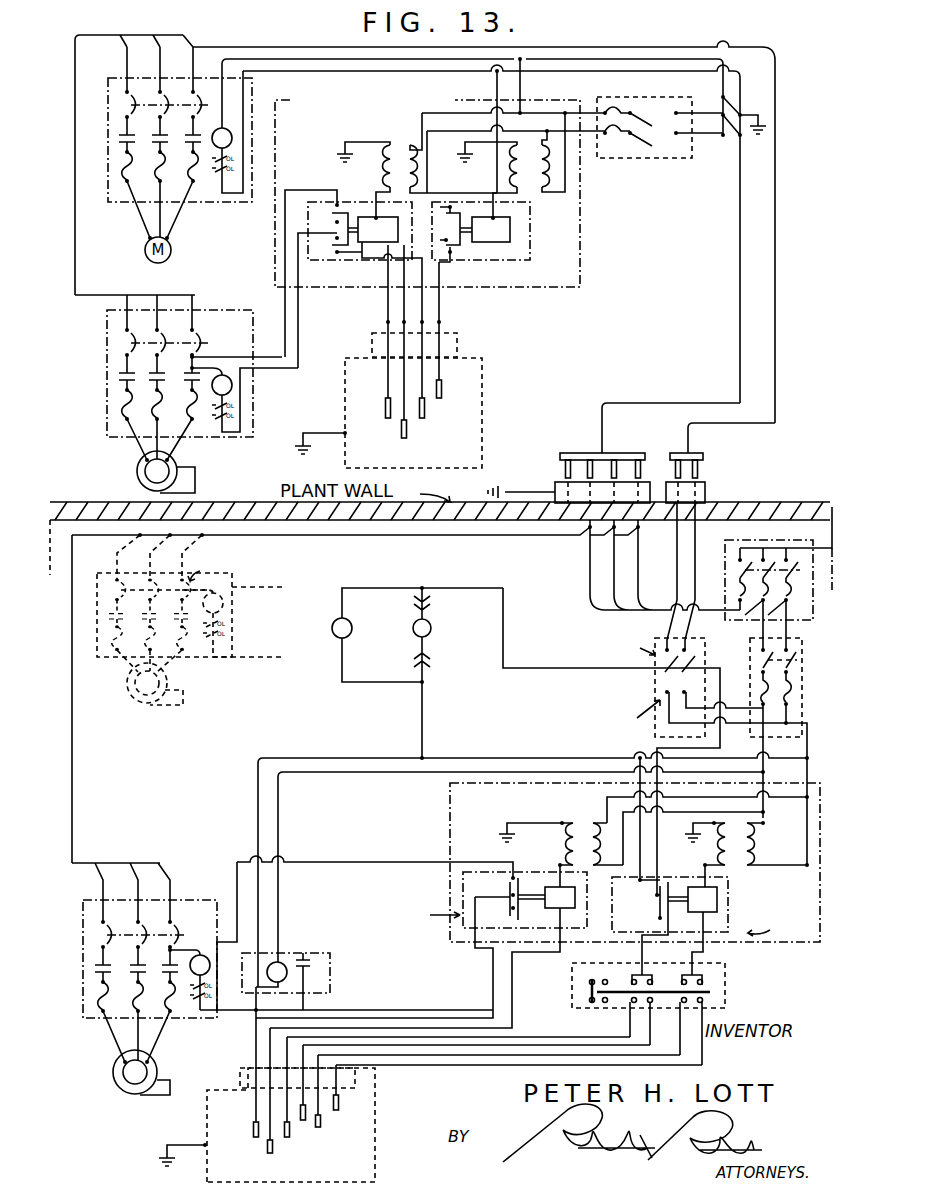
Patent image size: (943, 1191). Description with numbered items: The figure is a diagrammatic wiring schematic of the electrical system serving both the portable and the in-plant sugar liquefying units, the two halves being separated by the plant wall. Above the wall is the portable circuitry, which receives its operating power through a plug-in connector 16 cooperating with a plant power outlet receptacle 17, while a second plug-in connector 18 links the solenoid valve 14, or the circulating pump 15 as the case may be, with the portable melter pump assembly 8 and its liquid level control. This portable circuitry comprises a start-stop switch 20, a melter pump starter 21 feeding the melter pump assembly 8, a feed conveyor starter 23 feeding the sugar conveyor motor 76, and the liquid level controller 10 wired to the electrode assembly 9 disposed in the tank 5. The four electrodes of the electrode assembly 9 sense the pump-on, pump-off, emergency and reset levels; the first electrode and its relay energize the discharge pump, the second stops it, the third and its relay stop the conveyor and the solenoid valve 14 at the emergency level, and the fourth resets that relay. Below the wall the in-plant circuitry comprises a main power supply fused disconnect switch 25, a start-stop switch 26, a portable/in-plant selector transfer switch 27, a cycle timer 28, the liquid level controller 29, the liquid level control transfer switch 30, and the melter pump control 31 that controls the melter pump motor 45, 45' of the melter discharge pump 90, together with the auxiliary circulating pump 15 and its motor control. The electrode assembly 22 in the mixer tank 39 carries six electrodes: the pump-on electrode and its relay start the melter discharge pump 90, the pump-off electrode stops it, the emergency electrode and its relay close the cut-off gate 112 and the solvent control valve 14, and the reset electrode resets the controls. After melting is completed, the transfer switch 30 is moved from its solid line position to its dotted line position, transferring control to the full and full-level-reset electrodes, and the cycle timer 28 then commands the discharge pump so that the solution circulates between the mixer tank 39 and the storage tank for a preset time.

The sugar conveyor motor 76 is at (145, 254).
The feed conveyor starter 23 is at (204, 202).
The liquid level controller 10 is at (449, 248).
The start-stop switch 20 is at (700, 92).
The melter pump starter 21 is at (108, 410).
The melter pump assembly 8 is at (129, 469).
The electrode assembly 9 is at (448, 343).
The tank 5 is at (478, 401).
The plug-in connector 16 is at (623, 456).
The plant power outlet receptacle 17 is at (555, 488).
The second plug-in connector 18 is at (678, 453).
The main power supply fused disconnect switch 25 is at (740, 537).
The solenoid valve 14 is at (330, 636).
The cut-off gate 112 is at (438, 644).
The auxiliary circulating pump 15 is at (160, 688).
The selector transfer switch 27 is at (658, 688).
The start-stop switch 26 is at (748, 661).
The liquid level controller 29 is at (442, 825).
The cycle timer 28 is at (330, 975).
The melter pump control 31 is at (91, 1026).
The melter pump motor 45 is at (140, 1063).
The melter pump motor 45' is at (155, 1068).
The melter discharge pump 90 is at (158, 1071).
The electrode assembly 22 is at (352, 1086).
The mixer tank 39 is at (379, 1172).
The liquid level control transfer switch 30 is at (714, 978).